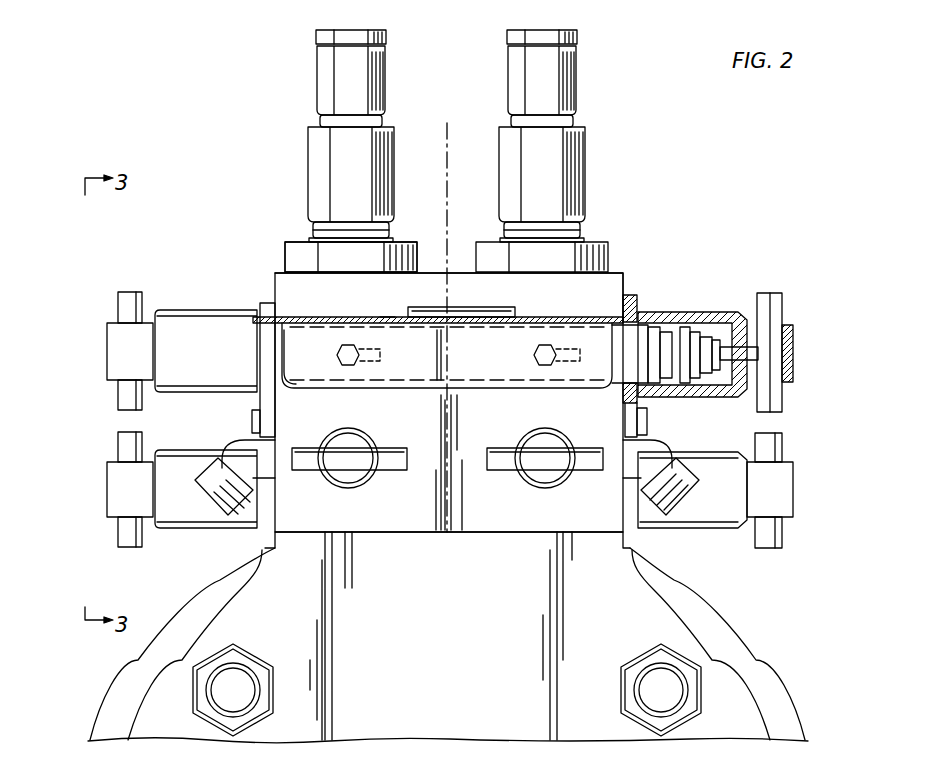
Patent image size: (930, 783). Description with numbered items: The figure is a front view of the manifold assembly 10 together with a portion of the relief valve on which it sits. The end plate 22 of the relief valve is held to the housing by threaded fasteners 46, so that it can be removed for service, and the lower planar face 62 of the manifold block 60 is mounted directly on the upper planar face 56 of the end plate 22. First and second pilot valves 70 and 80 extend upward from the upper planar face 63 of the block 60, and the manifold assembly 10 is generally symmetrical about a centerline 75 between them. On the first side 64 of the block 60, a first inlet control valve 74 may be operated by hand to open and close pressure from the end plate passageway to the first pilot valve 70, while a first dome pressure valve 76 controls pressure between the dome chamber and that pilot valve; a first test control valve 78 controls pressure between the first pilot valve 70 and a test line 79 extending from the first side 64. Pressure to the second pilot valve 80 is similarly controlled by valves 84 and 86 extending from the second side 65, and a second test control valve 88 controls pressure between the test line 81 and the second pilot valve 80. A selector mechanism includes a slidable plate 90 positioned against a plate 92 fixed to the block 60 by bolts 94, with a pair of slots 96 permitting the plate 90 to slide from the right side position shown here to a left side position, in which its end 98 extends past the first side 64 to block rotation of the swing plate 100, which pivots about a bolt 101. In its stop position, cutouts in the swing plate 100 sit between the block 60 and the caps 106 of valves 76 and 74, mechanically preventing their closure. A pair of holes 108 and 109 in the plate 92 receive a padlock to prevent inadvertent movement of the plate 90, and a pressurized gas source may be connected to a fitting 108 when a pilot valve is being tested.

The manifold assembly 10 is at (626, 211).
The end plate 22 is at (446, 644).
The threaded fasteners 46 is at (256, 668).
The upper planar face 56 is at (478, 531).
The manifold block 60 is at (501, 434).
The lower planar face 62 is at (258, 563).
The upper planar face 63 is at (462, 268).
The first side 64 is at (263, 278).
The second side 65 is at (628, 286).
The first pilot valve 70 is at (310, 149).
The first inlet control valve 74 is at (111, 482).
The centerline 75 is at (447, 141).
The first dome pressure valve 76 is at (115, 350).
The first test control valve 78 is at (352, 479).
The test line 79 is at (242, 452).
The second pilot valve 80 is at (593, 139).
The test line 81 is at (650, 460).
The inlet control valve 84 is at (790, 489).
The dome pressure valve 86 is at (792, 373).
The second test control valve 88 is at (552, 479).
The slidable plate 90 is at (496, 364).
The plate 92 is at (553, 320).
The bolts 94 is at (345, 365).
The slots 96 is at (567, 364).
The end 98 is at (297, 341).
The swing plate 100 is at (268, 355).
The bolt 101 is at (647, 418).
The caps 106 is at (200, 317).
The hole 108 is at (389, 318).
The hole 109 is at (505, 315).